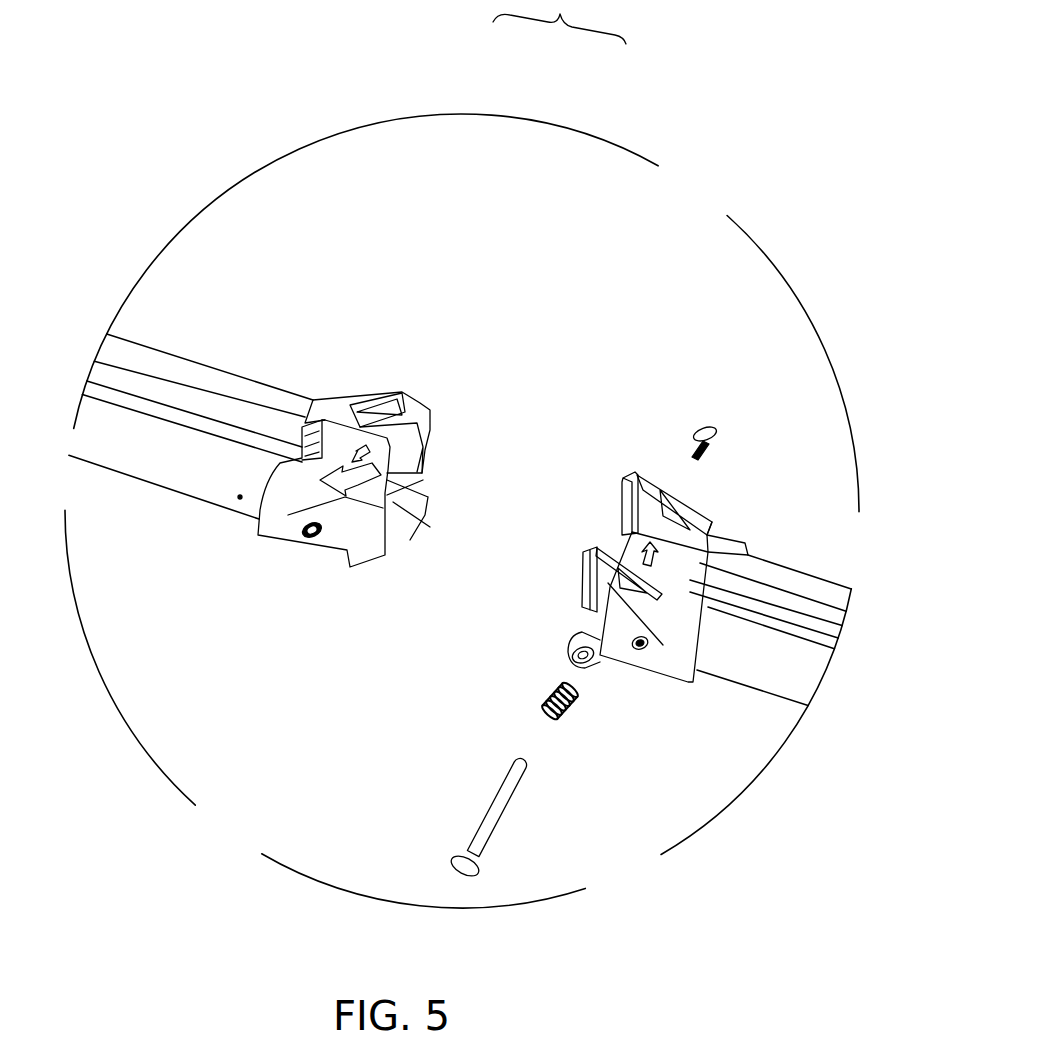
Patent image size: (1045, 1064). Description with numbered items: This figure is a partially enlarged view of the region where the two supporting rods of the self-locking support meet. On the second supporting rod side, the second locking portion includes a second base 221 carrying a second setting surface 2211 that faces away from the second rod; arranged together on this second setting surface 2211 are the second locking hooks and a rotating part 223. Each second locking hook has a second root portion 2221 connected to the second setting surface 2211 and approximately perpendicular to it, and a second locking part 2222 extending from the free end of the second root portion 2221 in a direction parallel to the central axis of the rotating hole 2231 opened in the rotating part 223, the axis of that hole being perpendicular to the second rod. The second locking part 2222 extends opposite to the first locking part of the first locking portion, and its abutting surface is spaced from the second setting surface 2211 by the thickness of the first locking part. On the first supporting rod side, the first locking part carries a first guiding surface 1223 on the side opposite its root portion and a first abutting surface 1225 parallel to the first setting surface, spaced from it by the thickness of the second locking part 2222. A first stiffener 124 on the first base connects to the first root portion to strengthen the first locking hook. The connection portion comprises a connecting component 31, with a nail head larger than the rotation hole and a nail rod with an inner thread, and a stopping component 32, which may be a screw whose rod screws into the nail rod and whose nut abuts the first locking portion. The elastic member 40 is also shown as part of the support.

The second base 221 is at (318, 410).
The second root portion 2221 is at (403, 392).
The second locking part 2222 is at (427, 423).
The second setting surface 2211 is at (390, 466).
The rotating part 223 is at (407, 517).
The rotating hole 2231 is at (383, 560).
The first guiding surface 1223 is at (580, 567).
The first abutting surface 1225 is at (640, 477).
The first stiffener 124 is at (676, 496).
The stopping component 32 is at (712, 427).
The elastic member 40 is at (580, 705).
The connecting component 31 is at (510, 813).